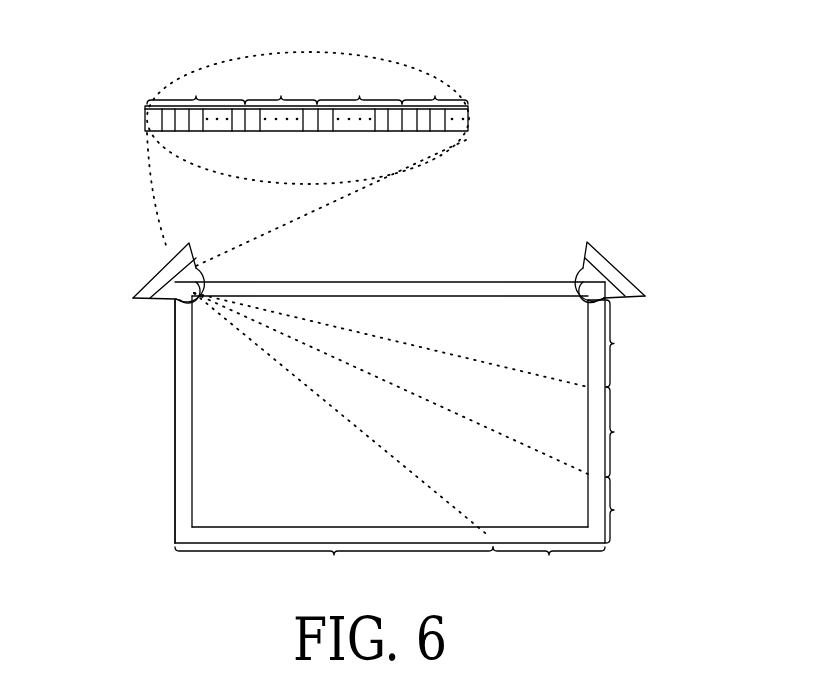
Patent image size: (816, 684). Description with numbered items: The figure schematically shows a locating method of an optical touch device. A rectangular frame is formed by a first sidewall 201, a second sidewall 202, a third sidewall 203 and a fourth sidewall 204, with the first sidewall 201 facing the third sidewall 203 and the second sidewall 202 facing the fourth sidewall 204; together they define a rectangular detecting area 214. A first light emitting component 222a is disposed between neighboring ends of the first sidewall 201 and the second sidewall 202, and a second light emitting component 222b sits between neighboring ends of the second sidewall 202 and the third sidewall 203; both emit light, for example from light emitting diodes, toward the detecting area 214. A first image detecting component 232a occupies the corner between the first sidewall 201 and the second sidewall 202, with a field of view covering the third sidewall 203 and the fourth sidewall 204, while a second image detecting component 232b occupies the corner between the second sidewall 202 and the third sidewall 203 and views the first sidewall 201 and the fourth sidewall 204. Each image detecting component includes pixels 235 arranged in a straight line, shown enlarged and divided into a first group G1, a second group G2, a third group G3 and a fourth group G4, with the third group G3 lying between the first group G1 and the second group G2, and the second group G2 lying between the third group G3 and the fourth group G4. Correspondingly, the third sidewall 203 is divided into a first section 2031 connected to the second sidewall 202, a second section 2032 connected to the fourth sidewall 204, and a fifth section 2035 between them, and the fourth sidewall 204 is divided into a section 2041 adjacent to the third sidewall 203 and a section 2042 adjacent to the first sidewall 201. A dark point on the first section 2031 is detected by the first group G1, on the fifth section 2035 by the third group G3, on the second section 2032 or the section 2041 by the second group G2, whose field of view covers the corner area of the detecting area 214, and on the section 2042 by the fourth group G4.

The pixels 235 is at (168, 118).
The first group G1 is at (199, 98).
The second group G2 is at (361, 98).
The third group G3 is at (282, 98).
The fourth group G4 is at (436, 98).
The first sidewall 201 is at (180, 447).
The second sidewall 202 is at (409, 283).
The third sidewall 203 is at (595, 402).
The fourth sidewall 204 is at (178, 535).
The detecting area 214 is at (208, 387).
The first section 2031 is at (631, 343).
The second section 2032 is at (640, 510).
The fifth section 2035 is at (640, 432).
The section adjacent to the third sidewall 2041 is at (549, 569).
The section adjacent to the first sidewall 2042 is at (334, 569).
The first light emitting component 222a is at (183, 300).
The second light emitting component 222b is at (587, 283).
The first image detecting component 232a is at (162, 278).
The second image detecting component 232b is at (615, 277).